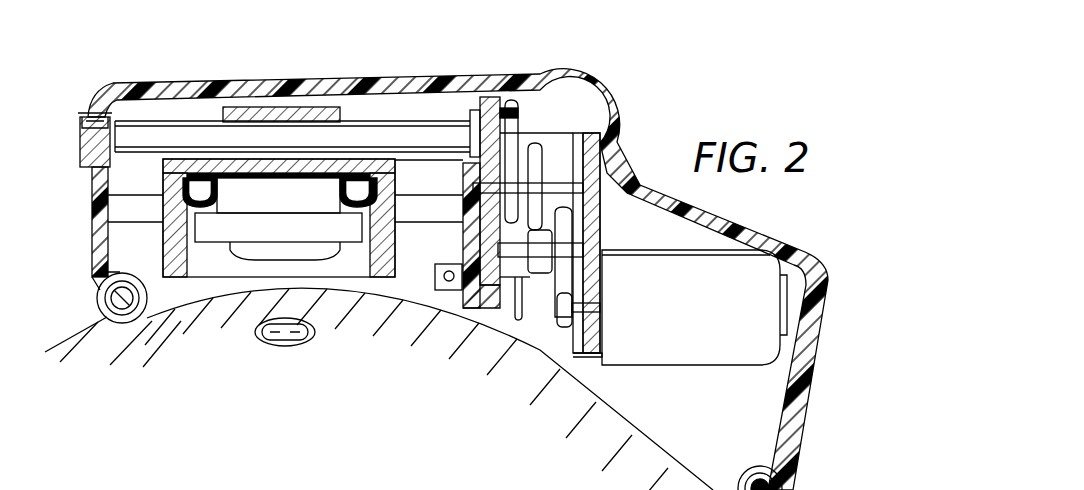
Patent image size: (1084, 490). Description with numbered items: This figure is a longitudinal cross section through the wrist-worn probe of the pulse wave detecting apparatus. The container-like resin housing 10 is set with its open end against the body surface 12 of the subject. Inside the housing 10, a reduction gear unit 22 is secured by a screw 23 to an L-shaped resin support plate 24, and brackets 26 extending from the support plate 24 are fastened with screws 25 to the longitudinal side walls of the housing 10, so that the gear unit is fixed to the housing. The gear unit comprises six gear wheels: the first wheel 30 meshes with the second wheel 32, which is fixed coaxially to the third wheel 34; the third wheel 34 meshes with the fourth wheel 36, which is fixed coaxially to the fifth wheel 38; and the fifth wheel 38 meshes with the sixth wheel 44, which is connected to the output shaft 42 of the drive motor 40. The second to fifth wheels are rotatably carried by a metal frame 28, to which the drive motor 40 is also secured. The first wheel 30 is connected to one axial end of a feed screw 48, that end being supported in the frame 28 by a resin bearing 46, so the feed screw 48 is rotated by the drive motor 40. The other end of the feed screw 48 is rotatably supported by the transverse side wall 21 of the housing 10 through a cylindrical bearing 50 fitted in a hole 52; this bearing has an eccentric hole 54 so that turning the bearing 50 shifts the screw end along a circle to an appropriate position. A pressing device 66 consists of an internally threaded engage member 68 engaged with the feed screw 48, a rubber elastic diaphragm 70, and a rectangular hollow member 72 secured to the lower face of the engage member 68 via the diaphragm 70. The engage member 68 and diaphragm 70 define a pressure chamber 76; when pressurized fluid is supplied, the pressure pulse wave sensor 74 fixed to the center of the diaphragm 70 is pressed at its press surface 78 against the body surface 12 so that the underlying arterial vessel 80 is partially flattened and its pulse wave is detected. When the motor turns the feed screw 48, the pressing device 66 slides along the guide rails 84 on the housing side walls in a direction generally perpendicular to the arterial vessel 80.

The housing 10 is at (647, 110).
The body surface 12 is at (658, 430).
The transverse side wall 21 is at (98, 228).
The reduction gear unit 22 is at (541, 92).
The screw 23 is at (520, 322).
The support plate 24 is at (488, 310).
The screws 25 is at (450, 282).
The brackets 26 is at (437, 290).
The metal frame 28 is at (487, 103).
The first wheel 30 is at (512, 133).
The second wheel 32 is at (545, 145).
The third wheel 34 is at (583, 135).
The fourth wheel 36 is at (542, 290).
The fifth wheel 38 is at (563, 230).
The drive motor 40 is at (717, 318).
The output shaft 42 is at (600, 307).
The sixth wheel 44 is at (565, 330).
The bearing 46 is at (497, 110).
The feed screw 48 is at (163, 137).
The cylindrical bearing 50 is at (82, 157).
The hole 52 is at (83, 110).
The eccentric hole 54 is at (82, 130).
The pressing device 66 is at (138, 181).
The engage member 68 is at (285, 110).
The elastic diaphragm 70 is at (257, 180).
The rectangular hollow member 72 is at (173, 238).
The pressure pulse wave sensor 74 is at (240, 253).
The pressure chamber 76 is at (357, 173).
The press surface 78 is at (283, 273).
The arterial vessel 80 is at (290, 347).
The guide rails 84 is at (403, 203).